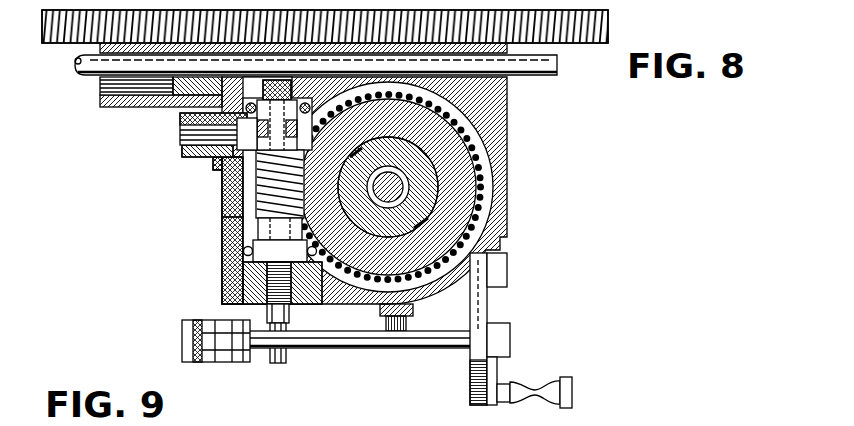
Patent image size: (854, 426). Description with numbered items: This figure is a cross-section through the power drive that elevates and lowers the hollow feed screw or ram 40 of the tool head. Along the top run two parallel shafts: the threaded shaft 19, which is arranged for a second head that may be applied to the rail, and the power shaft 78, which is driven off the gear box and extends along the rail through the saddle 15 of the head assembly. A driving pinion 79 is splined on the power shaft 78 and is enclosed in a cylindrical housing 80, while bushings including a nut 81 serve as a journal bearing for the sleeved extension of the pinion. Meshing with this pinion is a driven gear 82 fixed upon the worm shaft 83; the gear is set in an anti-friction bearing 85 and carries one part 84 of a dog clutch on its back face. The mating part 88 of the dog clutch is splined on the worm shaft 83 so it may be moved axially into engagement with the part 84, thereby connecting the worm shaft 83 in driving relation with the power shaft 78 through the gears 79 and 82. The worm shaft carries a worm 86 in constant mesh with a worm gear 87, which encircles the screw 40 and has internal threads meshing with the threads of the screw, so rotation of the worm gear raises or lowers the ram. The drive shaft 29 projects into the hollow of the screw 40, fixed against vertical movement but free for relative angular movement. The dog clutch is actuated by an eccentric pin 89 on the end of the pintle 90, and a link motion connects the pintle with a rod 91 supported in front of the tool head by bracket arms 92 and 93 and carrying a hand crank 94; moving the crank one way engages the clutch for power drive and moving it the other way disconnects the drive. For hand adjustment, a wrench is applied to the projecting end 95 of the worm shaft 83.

The threaded shaft 19 is at (557, 46).
The power shaft 78 is at (549, 76).
The cylindrical housing 80 is at (100, 40).
The nut 81 is at (173, 84).
The saddle 15 is at (108, 107).
The driving pinion 79 is at (198, 92).
The driven gear 82 is at (247, 112).
The pintle 90 is at (180, 134).
The dog clutch part 84 is at (186, 150).
The anti-friction bearing 85 is at (213, 163).
The eccentric pin 89 is at (226, 172).
The mating dog clutch part 88 is at (238, 204).
The worm 86 is at (244, 248).
The worm shaft 83 is at (272, 224).
The worm gear 87 is at (507, 148).
The hollow feed screw or ram 40 is at (426, 165).
The drive shaft 29 is at (404, 187).
The bracket arm 93 is at (480, 296).
The hand crank 94 is at (534, 388).
The bracket arm 92 is at (236, 352).
The projecting end 95 is at (278, 366).
The rod 91 is at (356, 333).